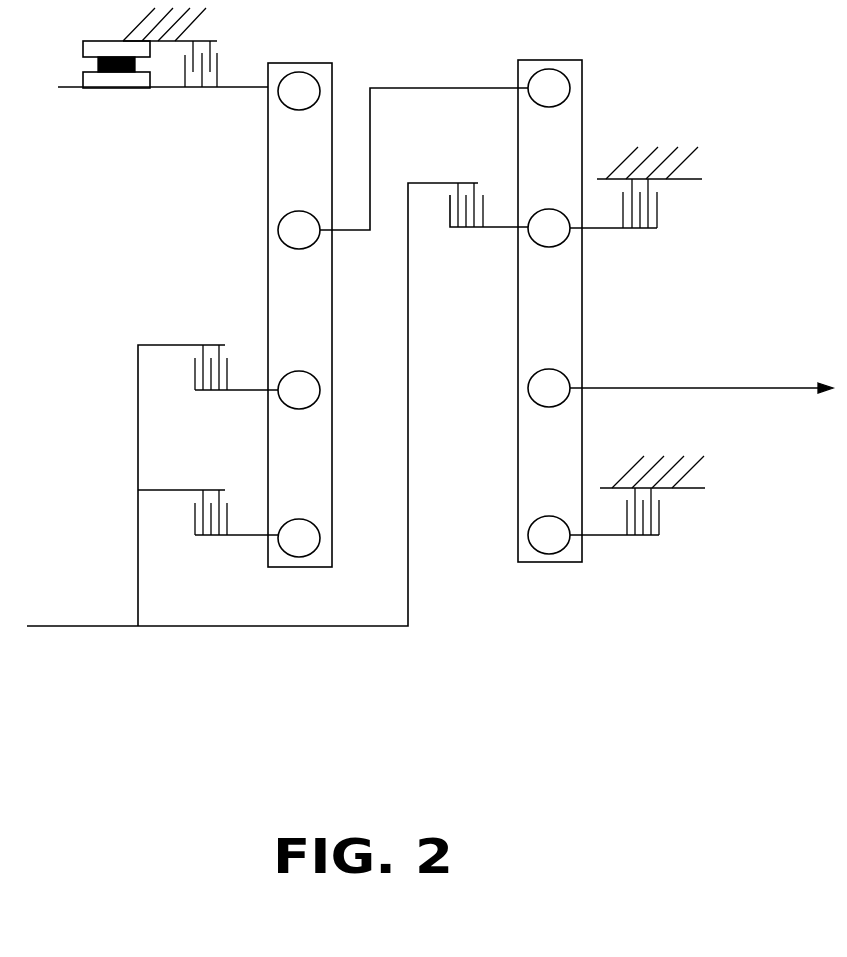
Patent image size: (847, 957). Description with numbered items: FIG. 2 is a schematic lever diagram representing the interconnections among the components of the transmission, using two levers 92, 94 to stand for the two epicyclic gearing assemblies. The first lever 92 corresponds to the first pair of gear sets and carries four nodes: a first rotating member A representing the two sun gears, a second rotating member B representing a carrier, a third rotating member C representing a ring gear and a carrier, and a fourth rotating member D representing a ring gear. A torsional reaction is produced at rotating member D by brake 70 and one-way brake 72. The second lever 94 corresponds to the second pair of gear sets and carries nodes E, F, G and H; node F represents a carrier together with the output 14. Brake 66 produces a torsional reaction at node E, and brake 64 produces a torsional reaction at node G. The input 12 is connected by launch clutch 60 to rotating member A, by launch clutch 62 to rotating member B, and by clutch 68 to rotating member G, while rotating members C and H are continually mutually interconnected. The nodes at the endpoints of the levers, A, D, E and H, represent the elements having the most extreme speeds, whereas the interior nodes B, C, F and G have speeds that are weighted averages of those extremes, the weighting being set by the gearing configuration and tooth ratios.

The input 12 is at (48, 626).
The output 14 is at (778, 386).
The launch clutch 60 is at (215, 503).
The launch clutch 62 is at (215, 357).
The brake 64 is at (648, 201).
The brake 66 is at (653, 507).
The clutch 68 is at (472, 193).
The brake 70 is at (208, 67).
The one-way brake 72 is at (83, 80).
The first lever 92 is at (287, 182).
The second lever 94 is at (560, 333).